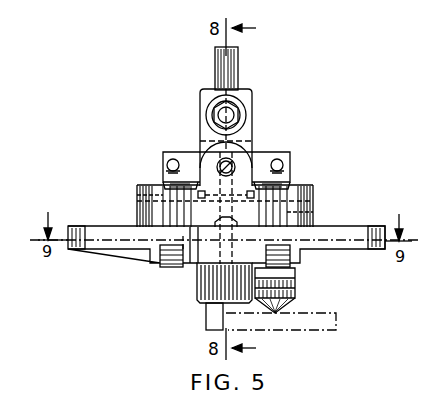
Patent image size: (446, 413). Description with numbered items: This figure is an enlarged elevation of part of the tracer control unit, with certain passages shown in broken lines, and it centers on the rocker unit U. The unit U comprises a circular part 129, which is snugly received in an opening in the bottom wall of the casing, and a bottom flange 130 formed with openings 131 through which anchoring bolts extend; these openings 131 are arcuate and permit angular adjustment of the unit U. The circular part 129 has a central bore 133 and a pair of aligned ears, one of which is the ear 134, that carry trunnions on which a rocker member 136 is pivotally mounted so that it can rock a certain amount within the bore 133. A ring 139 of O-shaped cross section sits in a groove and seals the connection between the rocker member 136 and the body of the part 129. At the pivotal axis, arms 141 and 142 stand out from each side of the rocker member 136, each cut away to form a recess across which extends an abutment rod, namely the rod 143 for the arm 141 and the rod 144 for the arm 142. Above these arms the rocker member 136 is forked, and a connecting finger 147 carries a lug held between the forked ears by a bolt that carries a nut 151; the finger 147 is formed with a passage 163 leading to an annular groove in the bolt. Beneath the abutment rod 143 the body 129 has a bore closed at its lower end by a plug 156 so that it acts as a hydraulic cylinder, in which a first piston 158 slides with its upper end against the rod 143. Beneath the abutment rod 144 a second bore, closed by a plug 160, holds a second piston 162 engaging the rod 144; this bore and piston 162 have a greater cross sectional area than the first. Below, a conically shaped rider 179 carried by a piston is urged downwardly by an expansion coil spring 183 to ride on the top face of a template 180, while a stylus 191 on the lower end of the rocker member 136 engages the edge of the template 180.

The rocker unit U is at (314, 188).
The circular part 129 is at (137, 207).
The bottom flange 130 is at (142, 250).
The openings 131 is at (98, 250).
The central bore 133 is at (194, 273).
The ear 134 is at (253, 140).
The rocker member 136 is at (197, 297).
The ring 139 is at (315, 198).
The arm 141 is at (163, 161).
The arm 142 is at (291, 161).
The abutment rod 143 is at (173, 158).
The abutment rod 144 is at (277, 158).
The connecting finger 147 is at (238, 62).
The nut 151 is at (208, 101).
The plug 156 is at (160, 266).
The piston 158 is at (155, 190).
The plug 160 is at (292, 263).
The piston 162 is at (314, 214).
The passage 163 is at (213, 63).
The conically shaped rider 179 is at (288, 305).
The template 180 is at (300, 329).
The expansion coil spring 183 is at (297, 289).
The stylus 191 is at (207, 325).